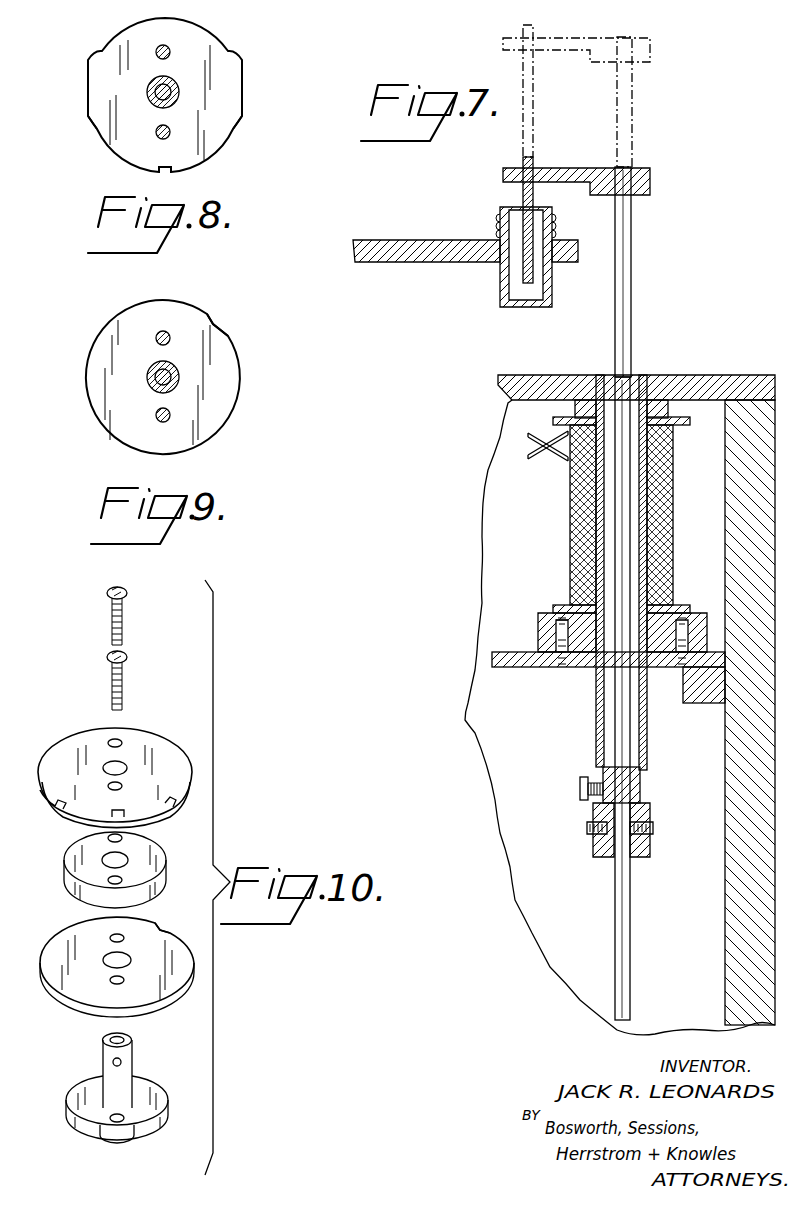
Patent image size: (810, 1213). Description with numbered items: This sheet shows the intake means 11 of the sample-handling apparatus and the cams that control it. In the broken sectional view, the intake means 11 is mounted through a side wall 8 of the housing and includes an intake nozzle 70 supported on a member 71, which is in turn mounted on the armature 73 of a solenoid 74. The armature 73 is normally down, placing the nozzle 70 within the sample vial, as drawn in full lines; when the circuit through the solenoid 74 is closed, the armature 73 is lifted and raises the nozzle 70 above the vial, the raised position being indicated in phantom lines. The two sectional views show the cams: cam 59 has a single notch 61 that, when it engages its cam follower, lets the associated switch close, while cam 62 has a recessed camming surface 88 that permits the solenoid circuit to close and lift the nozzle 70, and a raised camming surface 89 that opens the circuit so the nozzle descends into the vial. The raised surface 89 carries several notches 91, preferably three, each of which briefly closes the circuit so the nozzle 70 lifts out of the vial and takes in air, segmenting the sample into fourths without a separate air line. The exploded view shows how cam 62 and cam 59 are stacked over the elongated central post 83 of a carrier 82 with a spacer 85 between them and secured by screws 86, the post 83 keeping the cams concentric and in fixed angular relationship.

In FIG. 7, the side wall 8 is at (724, 903).
In FIG. 7, the intake means 11 is at (640, 348).
In FIG. 9, the cam 59 is at (220, 380).
In FIG. 10, the cam 59 is at (117, 967).
In FIG. 9, the notch 61 is at (213, 322).
In FIG. 10, the notch 61 is at (160, 930).
In FIG. 8, the cam 62 is at (195, 93).
In FIG. 10, the cam 62 is at (144, 769).
In FIG. 7, the intake nozzle 70 is at (523, 193).
In FIG. 7, the member 71 is at (652, 178).
In FIG. 7, the armature 73 is at (632, 282).
In FIG. 7, the solenoid 74 is at (570, 533).
In FIG. 10, the carrier 82 is at (165, 1120).
In FIG. 10, the central post 83 is at (133, 1058).
In FIG. 10, the spacer 85 is at (152, 868).
In FIG. 10, the screws 86 is at (125, 630).
In FIG. 8, the recessed camming surface 88 is at (210, 30).
In FIG. 10, the recessed camming surface 88 is at (135, 736).
In FIG. 8, the raised camming surface 89 is at (243, 116).
In FIG. 10, the raised camming surface 89 is at (45, 792).
In FIG. 8, the notches 91 is at (230, 134).
In FIG. 10, the notches 91 is at (58, 808).